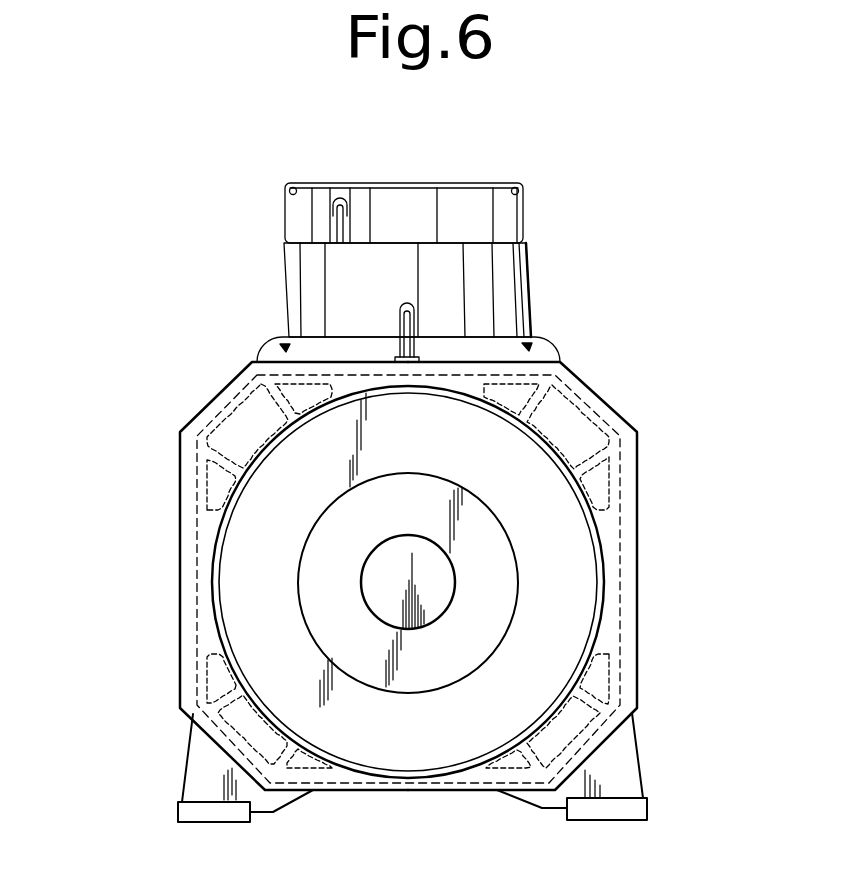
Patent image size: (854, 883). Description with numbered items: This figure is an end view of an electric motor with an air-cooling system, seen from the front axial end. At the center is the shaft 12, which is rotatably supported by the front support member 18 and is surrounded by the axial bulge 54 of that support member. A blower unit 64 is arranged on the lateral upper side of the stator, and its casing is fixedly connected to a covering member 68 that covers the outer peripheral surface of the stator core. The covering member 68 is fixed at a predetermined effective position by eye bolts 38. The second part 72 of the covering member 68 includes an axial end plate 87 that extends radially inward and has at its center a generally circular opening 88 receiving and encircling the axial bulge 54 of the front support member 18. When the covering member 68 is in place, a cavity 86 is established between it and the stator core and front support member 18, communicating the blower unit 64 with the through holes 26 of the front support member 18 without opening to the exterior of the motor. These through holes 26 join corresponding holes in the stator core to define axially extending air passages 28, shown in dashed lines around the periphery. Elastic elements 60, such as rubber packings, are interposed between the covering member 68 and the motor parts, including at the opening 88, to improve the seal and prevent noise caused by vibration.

The shaft 12 is at (378, 582).
The front support member 18 is at (567, 562).
The through holes 26 is at (411, 580).
The air passages 28 is at (210, 482).
The eye bolts 38 is at (398, 312).
The axial bulge 54 is at (568, 617).
The elastic elements 60 is at (217, 556).
The blower unit 64 is at (530, 278).
The covering member 68 is at (594, 388).
The second part 72 is at (608, 523).
The cavity 86 is at (238, 391).
The axial end plate 87 is at (207, 634).
The opening 88 is at (228, 533).